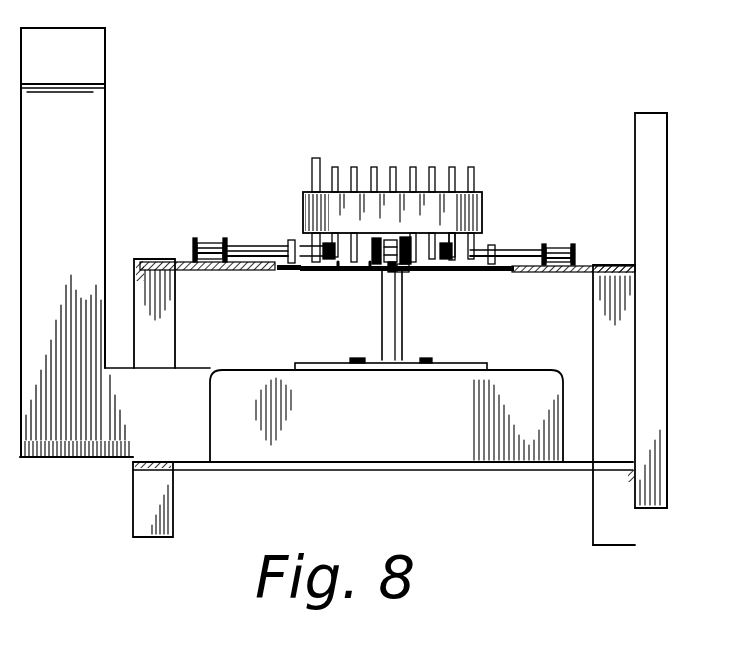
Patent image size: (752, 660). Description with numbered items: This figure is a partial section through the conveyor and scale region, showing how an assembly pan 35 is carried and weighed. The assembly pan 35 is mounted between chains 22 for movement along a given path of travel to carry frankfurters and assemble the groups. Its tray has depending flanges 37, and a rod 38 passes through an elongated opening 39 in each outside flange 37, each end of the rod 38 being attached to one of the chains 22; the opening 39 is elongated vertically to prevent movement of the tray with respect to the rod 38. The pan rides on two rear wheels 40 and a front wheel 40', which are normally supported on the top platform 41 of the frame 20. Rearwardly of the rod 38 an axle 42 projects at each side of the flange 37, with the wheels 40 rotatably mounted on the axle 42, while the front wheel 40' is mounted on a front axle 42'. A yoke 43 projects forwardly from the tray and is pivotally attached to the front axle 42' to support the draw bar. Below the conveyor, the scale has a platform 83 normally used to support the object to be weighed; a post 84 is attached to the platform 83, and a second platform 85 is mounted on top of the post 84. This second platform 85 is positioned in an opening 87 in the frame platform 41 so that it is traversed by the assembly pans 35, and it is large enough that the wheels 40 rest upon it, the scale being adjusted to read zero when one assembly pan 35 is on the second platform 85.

The frame 20 is at (180, 296).
The chains 22 is at (208, 240).
The assembly pan 35 is at (488, 190).
The flange 37 is at (336, 264).
The rod 38 is at (526, 244).
The elongated opening 39 is at (440, 246).
The rear wheel 40 is at (375, 228).
The front wheel 40' is at (419, 286).
The top platform 41 is at (252, 271).
The axle 42 is at (305, 222).
The front axle 42' is at (458, 263).
The yoke 43 is at (384, 271).
The platform 83 is at (472, 370).
The post 84 is at (402, 330).
The second platform 85 is at (275, 275).
The opening 87 is at (512, 275).